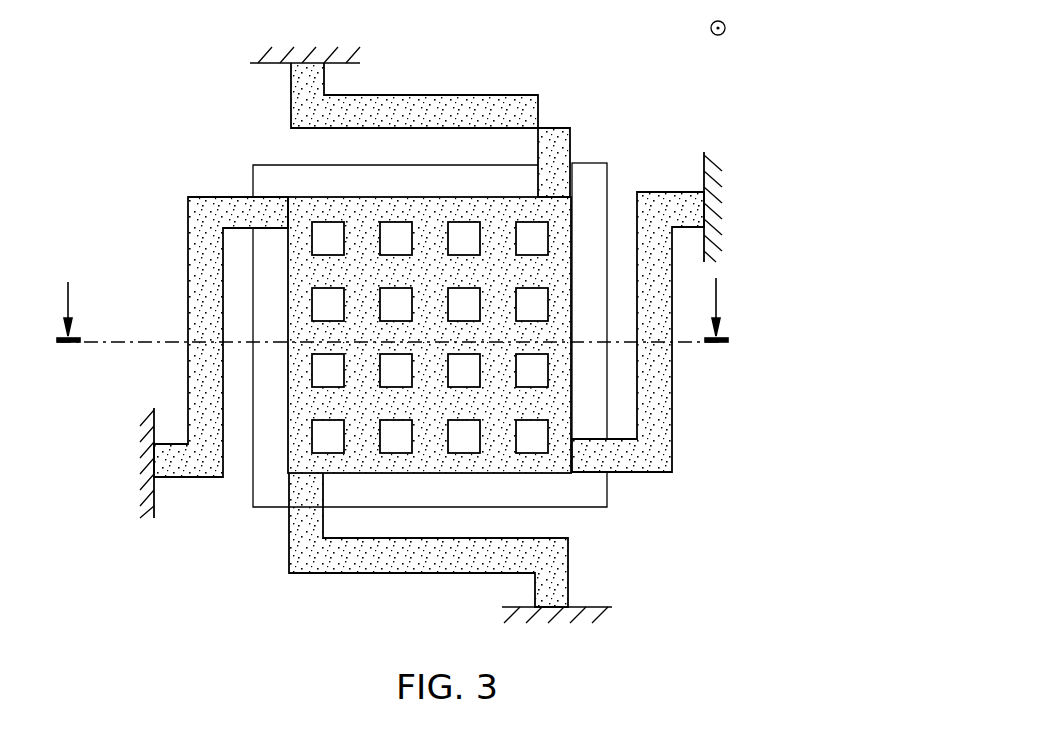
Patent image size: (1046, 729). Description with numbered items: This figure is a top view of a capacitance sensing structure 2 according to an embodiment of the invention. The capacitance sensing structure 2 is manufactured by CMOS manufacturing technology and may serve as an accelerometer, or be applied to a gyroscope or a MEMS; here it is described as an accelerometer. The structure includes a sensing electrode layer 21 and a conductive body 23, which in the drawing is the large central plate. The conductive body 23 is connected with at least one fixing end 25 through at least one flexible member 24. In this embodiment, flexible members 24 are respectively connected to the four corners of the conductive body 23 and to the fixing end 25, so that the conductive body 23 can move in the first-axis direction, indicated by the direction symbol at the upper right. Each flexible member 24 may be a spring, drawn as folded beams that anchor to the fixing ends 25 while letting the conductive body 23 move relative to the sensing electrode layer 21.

The capacitance sensing structure 2 is at (75, 22).
The sensing electrode layer 21 is at (597, 163).
The conductive body 23 is at (437, 196).
The flexible member 24 is at (664, 192).
The fixing end 25 is at (719, 203).